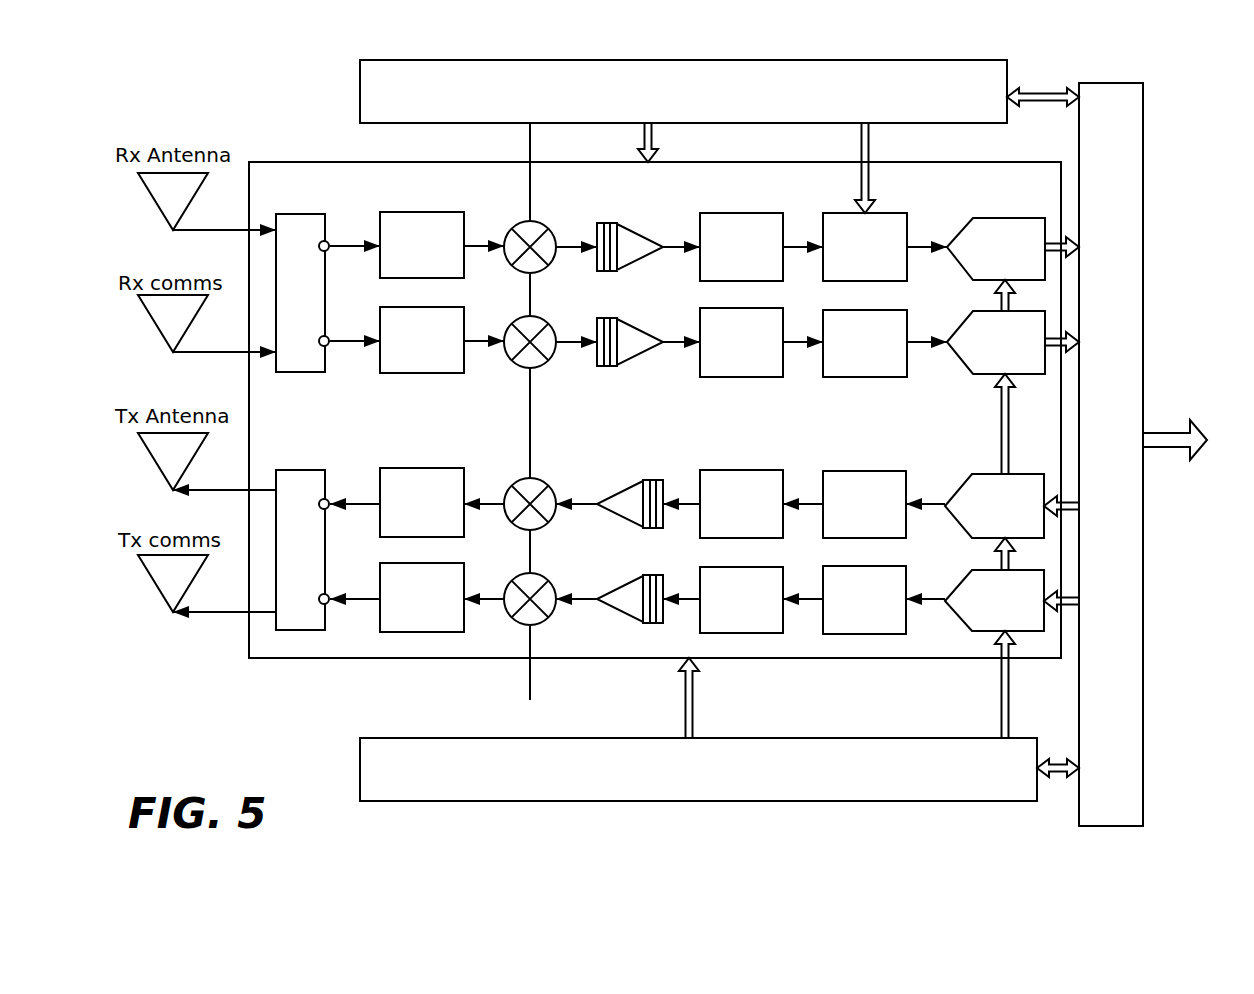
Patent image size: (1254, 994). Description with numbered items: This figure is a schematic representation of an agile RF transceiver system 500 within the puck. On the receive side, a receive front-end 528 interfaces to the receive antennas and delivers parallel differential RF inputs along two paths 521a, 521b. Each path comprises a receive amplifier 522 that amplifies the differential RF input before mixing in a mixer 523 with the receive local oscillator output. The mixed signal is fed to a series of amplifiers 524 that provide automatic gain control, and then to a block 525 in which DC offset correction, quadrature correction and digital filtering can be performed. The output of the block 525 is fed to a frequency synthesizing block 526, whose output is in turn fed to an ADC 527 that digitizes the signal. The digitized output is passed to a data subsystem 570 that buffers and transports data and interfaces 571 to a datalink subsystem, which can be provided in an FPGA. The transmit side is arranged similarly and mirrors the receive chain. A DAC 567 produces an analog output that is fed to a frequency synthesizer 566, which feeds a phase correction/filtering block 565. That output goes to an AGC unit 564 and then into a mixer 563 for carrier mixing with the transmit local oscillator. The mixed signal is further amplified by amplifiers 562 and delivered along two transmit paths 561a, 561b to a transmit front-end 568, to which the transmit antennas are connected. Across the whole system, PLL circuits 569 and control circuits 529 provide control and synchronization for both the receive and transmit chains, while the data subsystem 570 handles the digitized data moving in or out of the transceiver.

The agile RF transceiver system 500 is at (200, 99).
The first receive signal path 521a is at (349, 231).
The second receive signal path 521b is at (349, 322).
The receive amplifier 522 is at (442, 292).
The mixer 523 is at (518, 227).
The amplifier 524 is at (636, 223).
The block 525 is at (761, 295).
The frequency synthesizing block 526 is at (885, 295).
The ADC 527 is at (996, 296).
The receive front-end 528 is at (300, 293).
The control circuits 529 is at (683, 91).
The first transmit signal path 561a is at (349, 489).
The second transmit signal path 561b is at (349, 584).
The amplifier 562 is at (442, 550).
The mixer 563 is at (514, 481).
The AGC unit 564 is at (633, 482).
The phase correction/filtering block 565 is at (761, 551).
The frequency synthesizer 566 is at (884, 552).
The DAC 567 is at (994, 552).
The transmit front-end 568 is at (572, 695).
The PLL circuits 569 is at (698, 769).
The data subsystem 570 is at (1111, 454).
The interface 571 is at (1196, 440).